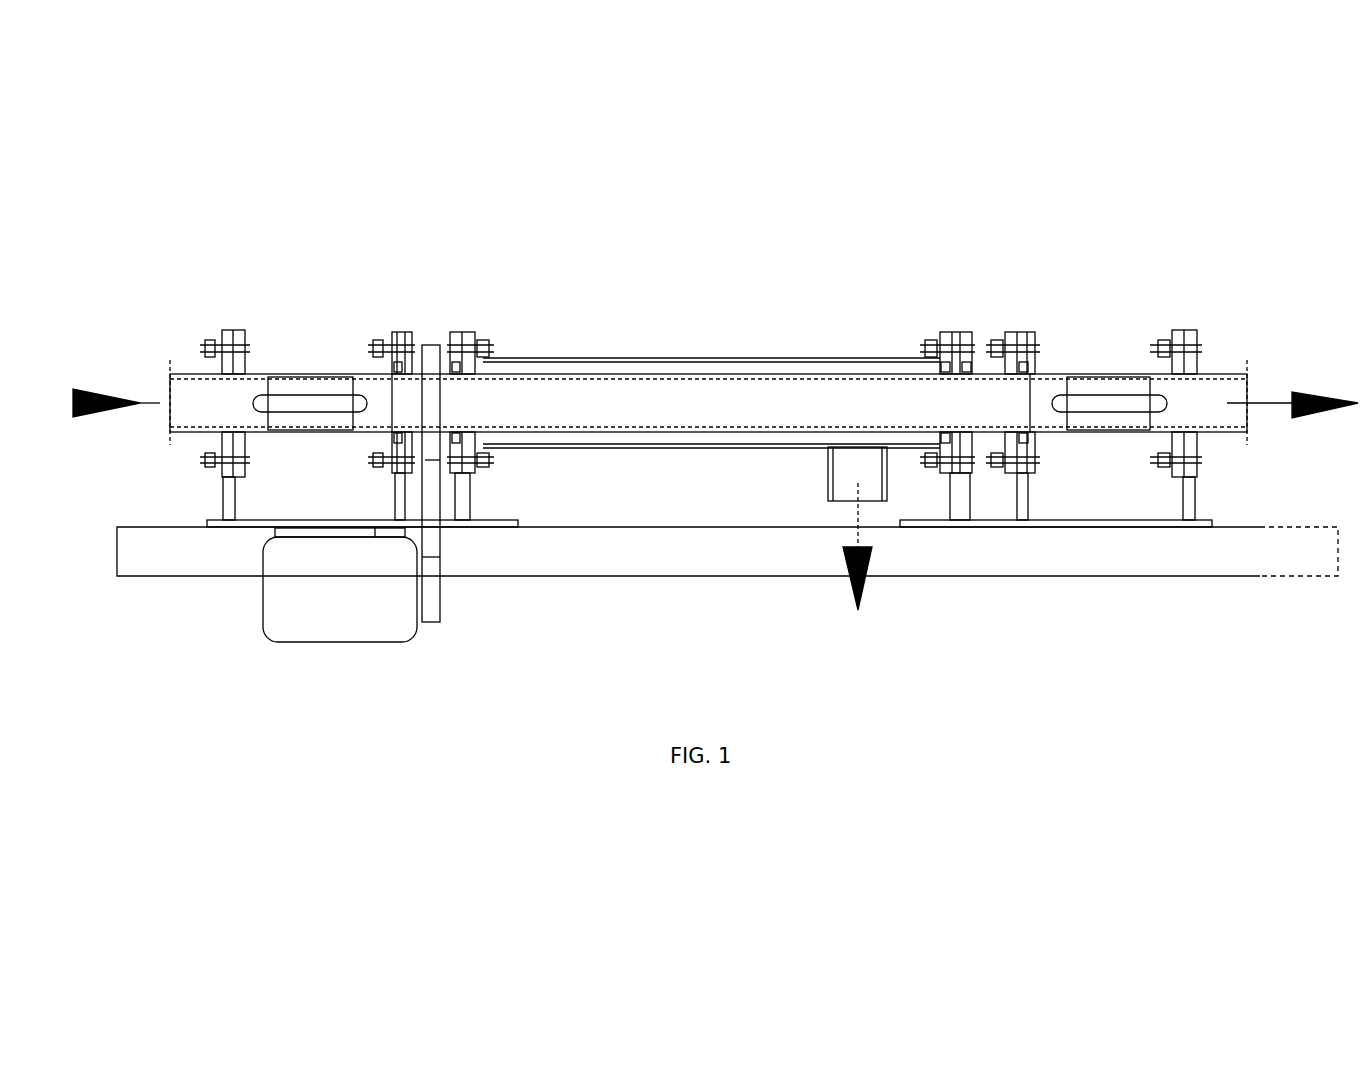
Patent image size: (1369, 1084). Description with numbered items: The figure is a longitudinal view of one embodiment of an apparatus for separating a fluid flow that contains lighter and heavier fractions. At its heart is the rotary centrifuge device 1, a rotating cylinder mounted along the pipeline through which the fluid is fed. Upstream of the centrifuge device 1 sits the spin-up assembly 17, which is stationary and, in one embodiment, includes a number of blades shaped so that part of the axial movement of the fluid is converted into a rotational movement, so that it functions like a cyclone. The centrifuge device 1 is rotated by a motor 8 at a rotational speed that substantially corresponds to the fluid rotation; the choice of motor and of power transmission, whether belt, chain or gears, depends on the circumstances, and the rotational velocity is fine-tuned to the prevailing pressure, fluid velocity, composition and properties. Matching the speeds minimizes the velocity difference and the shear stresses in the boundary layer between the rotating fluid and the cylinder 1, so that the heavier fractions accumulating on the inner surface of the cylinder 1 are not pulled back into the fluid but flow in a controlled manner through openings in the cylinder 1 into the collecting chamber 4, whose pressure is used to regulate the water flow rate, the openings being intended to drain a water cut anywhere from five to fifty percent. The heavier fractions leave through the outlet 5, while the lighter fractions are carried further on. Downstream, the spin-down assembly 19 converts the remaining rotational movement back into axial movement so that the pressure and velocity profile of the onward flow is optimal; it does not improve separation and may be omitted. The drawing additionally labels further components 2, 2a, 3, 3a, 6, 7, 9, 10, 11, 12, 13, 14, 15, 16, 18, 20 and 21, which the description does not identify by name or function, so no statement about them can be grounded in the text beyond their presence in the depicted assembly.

The rotary centrifuge device 1 is at (608, 376).
The support plate 2 is at (450, 370).
The support leg 2a is at (462, 485).
The clamp block 3 is at (970, 368).
The support leg 3a is at (950, 495).
The collecting chamber 4 is at (753, 359).
The outlet 5 is at (832, 475).
The clamp block 6 is at (483, 366).
The rail holder 7 is at (942, 367).
The motor 8 is at (363, 613).
The shaft 9 is at (428, 465).
The clamp block 10 is at (397, 372).
The clamp block 11 is at (1023, 368).
The support leg 12 is at (393, 512).
The support leg 13 is at (1028, 503).
The end plate 14 is at (270, 375).
The support leg 15 is at (222, 497).
The support leg 16 is at (1195, 503).
The spin-up assembly 17 is at (300, 404).
The end plate 18 is at (1093, 375).
The spin-down assembly 19 is at (1093, 405).
The mounting plate 20 is at (248, 522).
The mounting plate 21 is at (1128, 520).